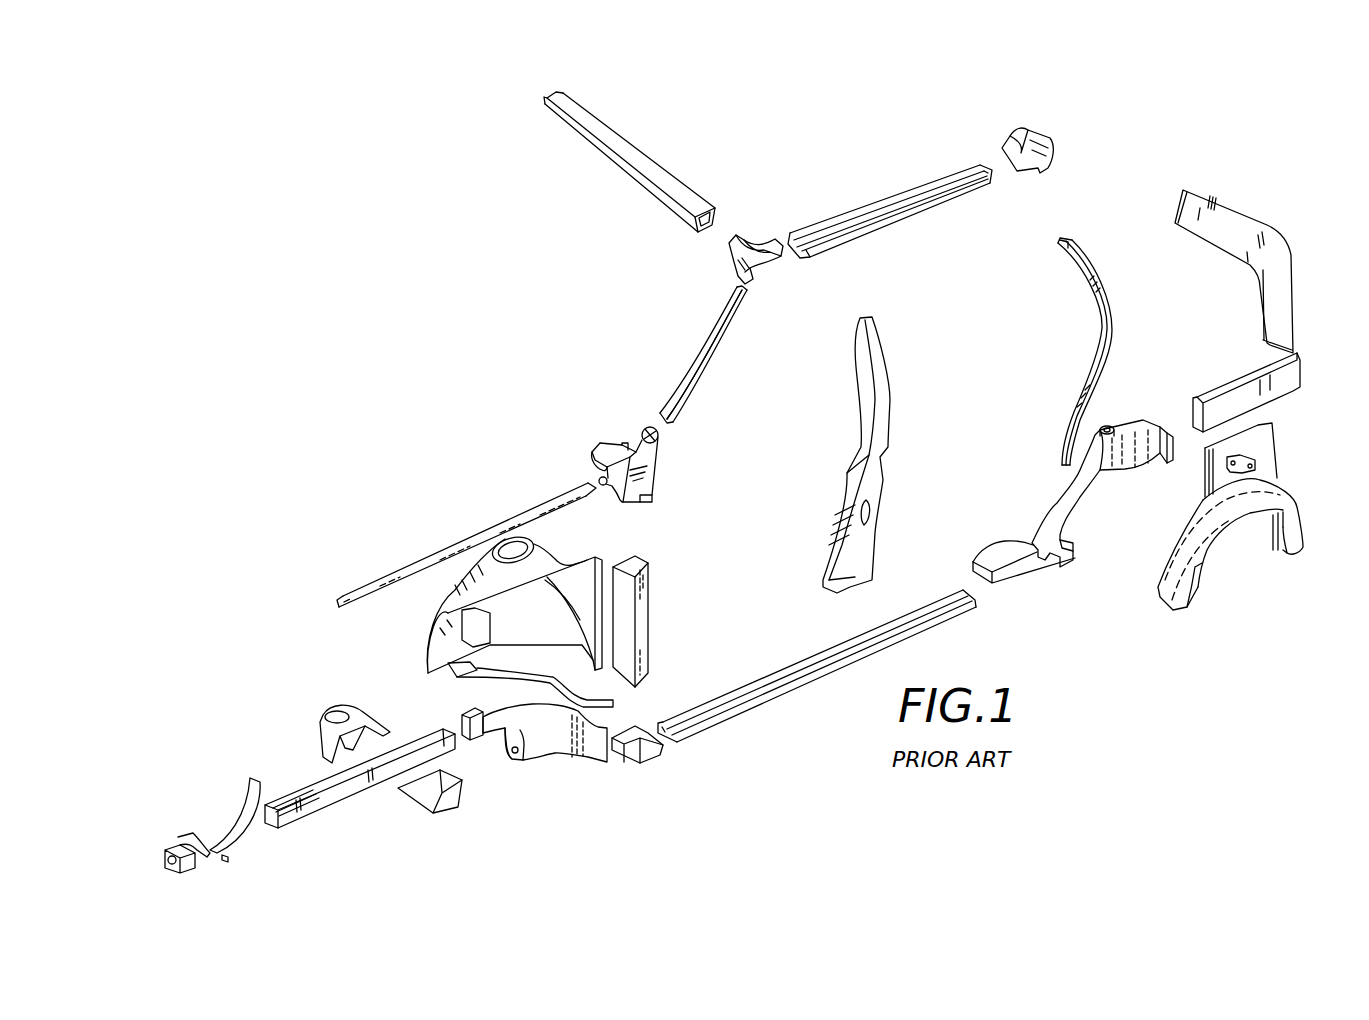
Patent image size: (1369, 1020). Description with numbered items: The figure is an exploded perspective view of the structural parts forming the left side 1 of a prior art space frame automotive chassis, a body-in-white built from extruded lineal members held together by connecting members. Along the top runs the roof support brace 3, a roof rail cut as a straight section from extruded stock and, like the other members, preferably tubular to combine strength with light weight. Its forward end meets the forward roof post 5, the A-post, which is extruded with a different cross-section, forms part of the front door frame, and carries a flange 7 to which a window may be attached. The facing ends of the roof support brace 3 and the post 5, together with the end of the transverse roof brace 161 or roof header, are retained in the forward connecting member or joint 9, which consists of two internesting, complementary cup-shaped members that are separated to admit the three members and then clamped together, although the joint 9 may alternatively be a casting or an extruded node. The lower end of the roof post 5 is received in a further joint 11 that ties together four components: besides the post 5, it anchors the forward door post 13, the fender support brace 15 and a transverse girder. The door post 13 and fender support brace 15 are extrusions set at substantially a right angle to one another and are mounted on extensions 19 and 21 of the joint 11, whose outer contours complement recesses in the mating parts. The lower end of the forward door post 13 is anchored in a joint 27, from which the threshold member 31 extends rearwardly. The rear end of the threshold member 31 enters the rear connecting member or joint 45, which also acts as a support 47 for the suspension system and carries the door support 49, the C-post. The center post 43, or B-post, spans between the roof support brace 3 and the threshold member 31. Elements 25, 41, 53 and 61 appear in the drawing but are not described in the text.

The left side of the vehicle 1 is at (545, 349).
The transverse roof brace 161 is at (618, 134).
The roof support brace 3 is at (903, 193).
The rear corner bracket 61 is at (1033, 142).
The forward connecting member or joint 9 is at (756, 240).
The flange 7 is at (712, 320).
The forward roof post 5 is at (686, 385).
The further joint 11 is at (625, 443).
The bracket flange 25 is at (598, 466).
The extension 21 is at (605, 485).
The extension 19 is at (657, 500).
The fender support brace 15 is at (418, 562).
The wheel house 41 is at (430, 638).
The forward door post 13 is at (650, 630).
The threshold member 31 is at (780, 685).
The joint 27 is at (552, 742).
The center post 43 is at (862, 452).
The door support 49 is at (1095, 364).
The support 47 is at (1110, 424).
The rear connecting member or joint 45 is at (1060, 503).
The rear sill block 53 is at (1005, 551).